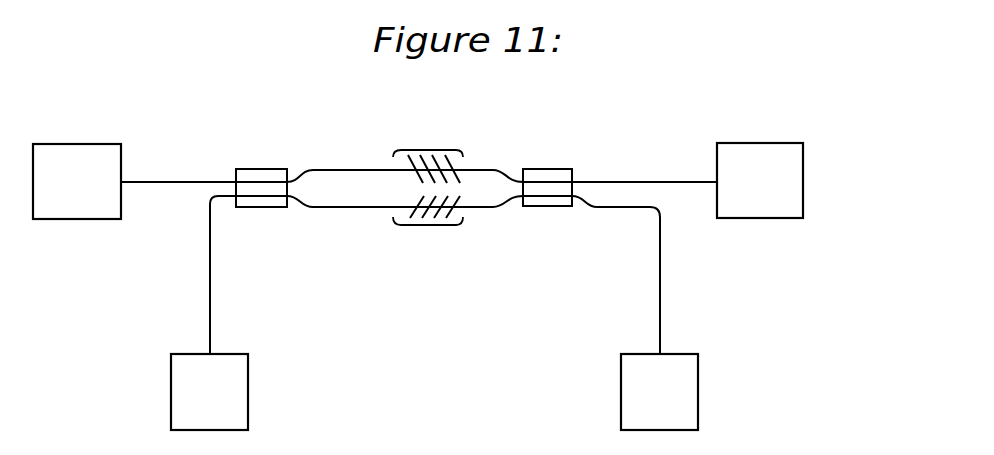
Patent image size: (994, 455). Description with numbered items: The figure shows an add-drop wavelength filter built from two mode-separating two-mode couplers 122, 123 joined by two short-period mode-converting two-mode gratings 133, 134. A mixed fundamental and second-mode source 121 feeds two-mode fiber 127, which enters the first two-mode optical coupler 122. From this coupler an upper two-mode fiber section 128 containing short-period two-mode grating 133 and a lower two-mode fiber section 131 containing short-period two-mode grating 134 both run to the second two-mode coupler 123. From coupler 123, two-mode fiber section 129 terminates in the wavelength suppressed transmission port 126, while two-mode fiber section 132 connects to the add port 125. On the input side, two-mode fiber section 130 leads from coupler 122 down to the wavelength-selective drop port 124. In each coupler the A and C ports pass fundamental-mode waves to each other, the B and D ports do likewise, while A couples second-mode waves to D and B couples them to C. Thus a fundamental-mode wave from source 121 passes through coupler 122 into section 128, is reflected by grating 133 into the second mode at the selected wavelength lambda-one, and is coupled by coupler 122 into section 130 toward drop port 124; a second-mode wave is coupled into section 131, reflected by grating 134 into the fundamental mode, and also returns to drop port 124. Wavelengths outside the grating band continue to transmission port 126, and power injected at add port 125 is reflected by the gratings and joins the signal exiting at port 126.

The two-mode source 121 is at (40, 137).
The two-mode optical coupler 122 is at (277, 168).
The two-mode coupler 123 is at (524, 166).
The wavelength-selective drop port 124 is at (229, 350).
The add port 125 is at (678, 350).
The wavelength suppressed transmission port 126 is at (719, 135).
The two-mode fiber 127 is at (149, 176).
The two-mode fiber section 128 is at (313, 165).
The two-mode fiber section 129 is at (668, 175).
The two-mode fiber section 130 is at (208, 263).
The two-mode fiber section 131 is at (315, 214).
The two-mode fiber section 132 is at (658, 271).
The short-period two-mode grating 133 is at (442, 150).
The short-period two-mode grating 134 is at (442, 225).